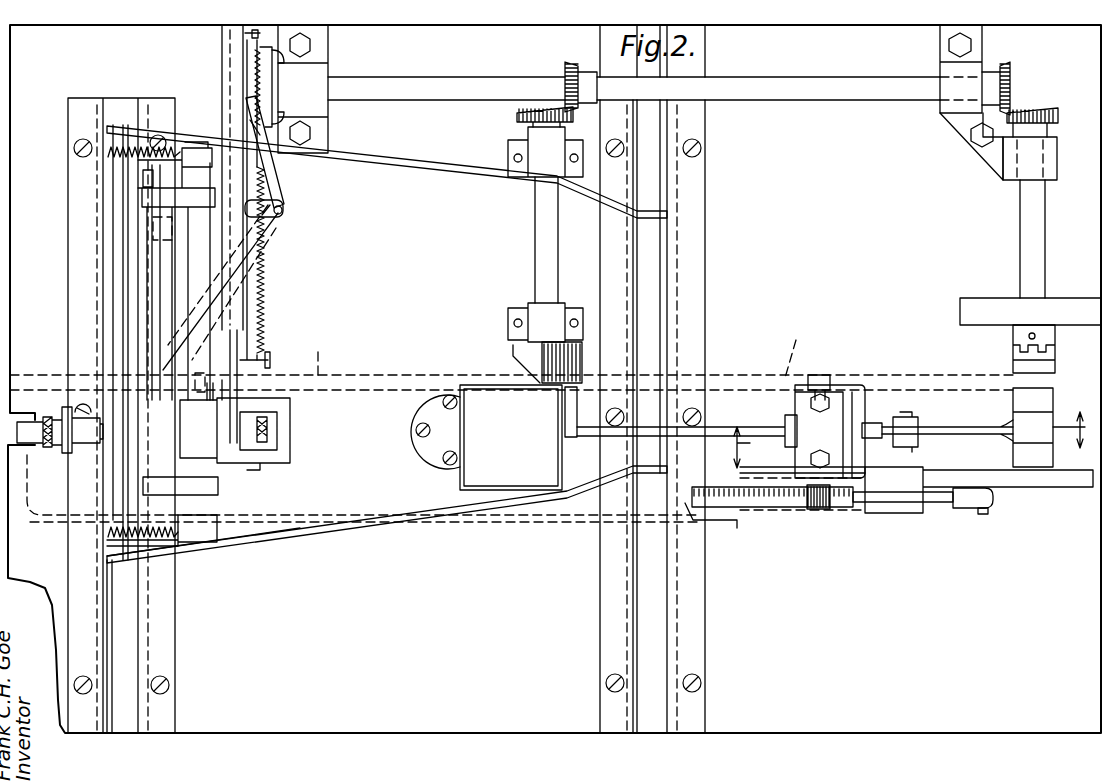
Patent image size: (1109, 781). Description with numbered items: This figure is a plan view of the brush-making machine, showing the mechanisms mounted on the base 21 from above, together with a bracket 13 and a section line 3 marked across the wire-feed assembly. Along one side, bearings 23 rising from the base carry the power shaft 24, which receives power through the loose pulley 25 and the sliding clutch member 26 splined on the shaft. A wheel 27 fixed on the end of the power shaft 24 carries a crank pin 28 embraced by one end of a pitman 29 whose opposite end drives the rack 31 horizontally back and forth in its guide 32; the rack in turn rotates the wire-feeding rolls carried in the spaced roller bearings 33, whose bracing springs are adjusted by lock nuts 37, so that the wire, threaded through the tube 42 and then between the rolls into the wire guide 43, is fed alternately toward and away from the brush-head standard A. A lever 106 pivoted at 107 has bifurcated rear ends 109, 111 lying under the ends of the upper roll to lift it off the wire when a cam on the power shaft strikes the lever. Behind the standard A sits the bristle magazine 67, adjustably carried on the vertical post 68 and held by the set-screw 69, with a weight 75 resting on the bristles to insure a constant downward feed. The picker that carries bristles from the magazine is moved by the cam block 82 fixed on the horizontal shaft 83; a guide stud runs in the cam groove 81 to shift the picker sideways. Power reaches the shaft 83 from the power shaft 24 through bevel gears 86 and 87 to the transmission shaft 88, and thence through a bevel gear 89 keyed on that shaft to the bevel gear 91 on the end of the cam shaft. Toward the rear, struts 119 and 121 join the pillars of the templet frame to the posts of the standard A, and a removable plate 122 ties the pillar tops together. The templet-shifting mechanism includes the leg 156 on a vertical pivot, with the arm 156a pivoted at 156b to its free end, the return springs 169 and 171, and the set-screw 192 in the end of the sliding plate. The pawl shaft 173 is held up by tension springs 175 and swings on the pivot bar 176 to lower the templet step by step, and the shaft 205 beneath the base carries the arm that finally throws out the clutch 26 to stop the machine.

The bearing bracket 13 is at (315, 75).
The base 21 is at (1000, 733).
The bearings 23 is at (1045, 157).
The power shaft 24 is at (1035, 225).
The loose pulley 25 is at (983, 302).
The sliding clutch member 26 is at (1015, 366).
The wheel 27 is at (1075, 488).
The crank pin 28 is at (984, 514).
The pitman 29 is at (940, 510).
The section line 3 is at (908, 440).
The rack 31 is at (782, 508).
The guide 32 is at (905, 504).
The roller bearings 33 is at (795, 403).
The lock nuts 37 is at (838, 400).
The tube 42 is at (876, 425).
The wire guide 43 is at (714, 430).
The magazine 67 is at (530, 492).
The vertical post 68 is at (448, 440).
The set-screw 69 is at (440, 430).
The weight 75 is at (511, 437).
The cam groove 81 is at (540, 360).
The cam block 82 is at (530, 345).
The horizontal shaft 83 is at (543, 228).
The bevel gear 86 is at (1050, 110).
The bevel gear 87 is at (1010, 70).
The transmission shaft 88 is at (445, 86).
The bevel gear 89 is at (568, 64).
The bevel gear 91 is at (520, 112).
The lever 106 is at (980, 422).
The pivot 107 is at (912, 420).
The bifurcated rear end 109 is at (852, 509).
The bifurcated rear end 111 is at (828, 378).
The strut 119 is at (318, 533).
The strut 121 is at (392, 162).
The removable plate 122 is at (118, 285).
The leg 156 is at (282, 222).
The arm 156a is at (290, 183).
The pivot 156b is at (292, 214).
The spring 169 is at (325, 128).
The spring 171 is at (268, 300).
The shaft 173 is at (190, 355).
The tension spring 175 is at (118, 150).
The pivot bar 176 is at (155, 312).
The set-screw 192 is at (262, 403).
The shaft 205 is at (563, 347).
The brush-head standard A is at (686, 263).